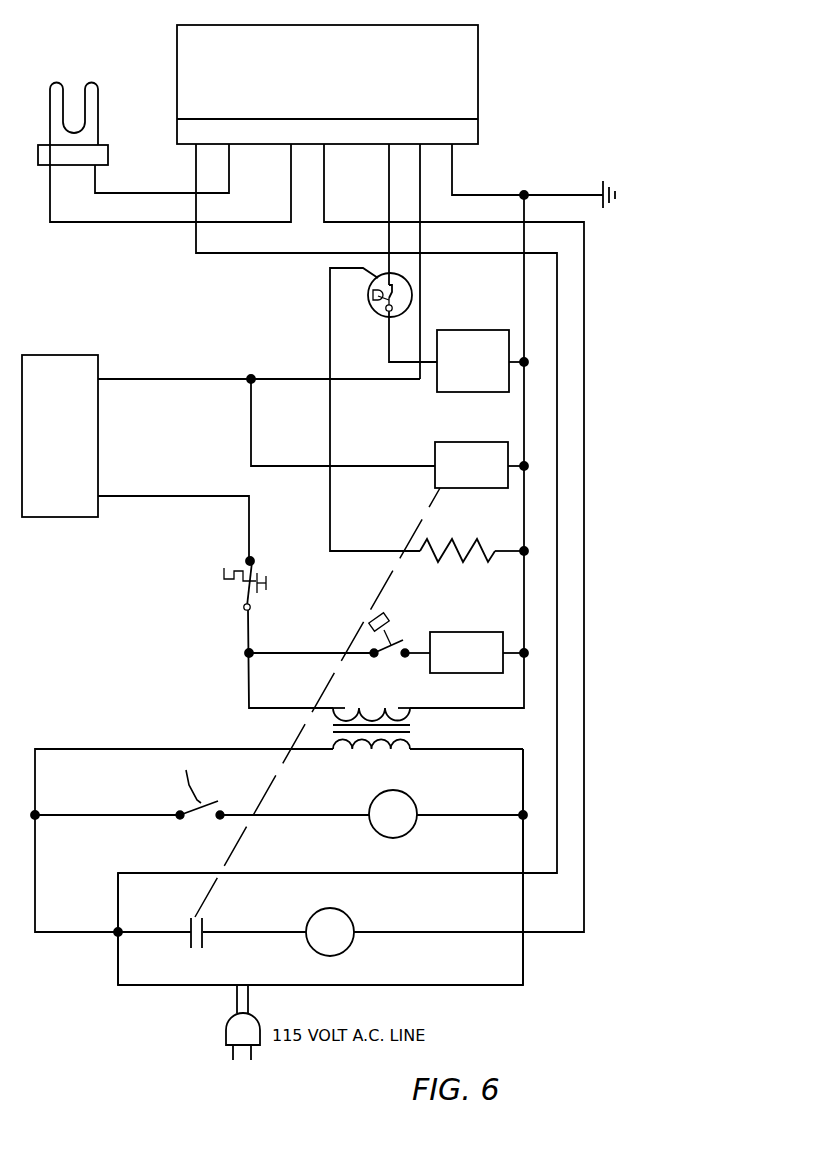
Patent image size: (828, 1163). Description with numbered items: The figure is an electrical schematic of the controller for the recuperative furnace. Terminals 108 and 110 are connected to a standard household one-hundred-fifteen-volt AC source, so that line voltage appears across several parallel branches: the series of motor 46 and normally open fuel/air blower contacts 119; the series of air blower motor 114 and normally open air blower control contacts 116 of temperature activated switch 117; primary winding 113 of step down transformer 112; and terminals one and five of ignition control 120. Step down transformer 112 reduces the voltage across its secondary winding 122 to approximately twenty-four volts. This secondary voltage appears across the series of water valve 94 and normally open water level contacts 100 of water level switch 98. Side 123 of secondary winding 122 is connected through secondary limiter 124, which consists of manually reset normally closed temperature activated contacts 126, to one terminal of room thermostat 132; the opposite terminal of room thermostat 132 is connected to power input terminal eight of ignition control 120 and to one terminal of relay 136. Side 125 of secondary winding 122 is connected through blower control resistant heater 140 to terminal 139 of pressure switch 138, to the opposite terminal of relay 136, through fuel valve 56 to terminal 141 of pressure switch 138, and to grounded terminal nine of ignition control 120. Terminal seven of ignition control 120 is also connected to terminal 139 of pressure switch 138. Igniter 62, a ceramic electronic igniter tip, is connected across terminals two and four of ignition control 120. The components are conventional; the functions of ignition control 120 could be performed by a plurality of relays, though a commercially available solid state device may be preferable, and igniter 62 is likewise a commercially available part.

The igniter 62 is at (88, 80).
The ignition control 120 is at (478, 84).
The terminal of pressure switch 139 is at (384, 286).
The pressure switch 138 is at (372, 298).
The terminal of pressure switch 141 is at (385, 312).
The fuel valve 56 is at (455, 330).
The room thermostat 132 is at (42, 355).
The relay 136 is at (452, 442).
The blower control resistant heater 140 is at (453, 537).
The secondary limiter 124 is at (227, 584).
The temperature activated contacts 126 is at (242, 604).
The water level switch 98 is at (392, 613).
The water level contacts 100 is at (410, 650).
The water valve 94 is at (470, 632).
The side of secondary winding 123 is at (348, 693).
The secondary winding 122 is at (372, 707).
The side of secondary winding 125 is at (406, 705).
The step down transformer 112 is at (416, 729).
The primary winding 113 is at (372, 750).
The temperature activated switch 117 is at (200, 789).
The air blower control contacts 116 is at (219, 822).
The air blower motor 114 is at (414, 800).
The motor 46 is at (350, 916).
The fuel/air blower contacts 119 is at (198, 948).
The terminal 108 is at (118, 962).
The terminal 110 is at (523, 958).